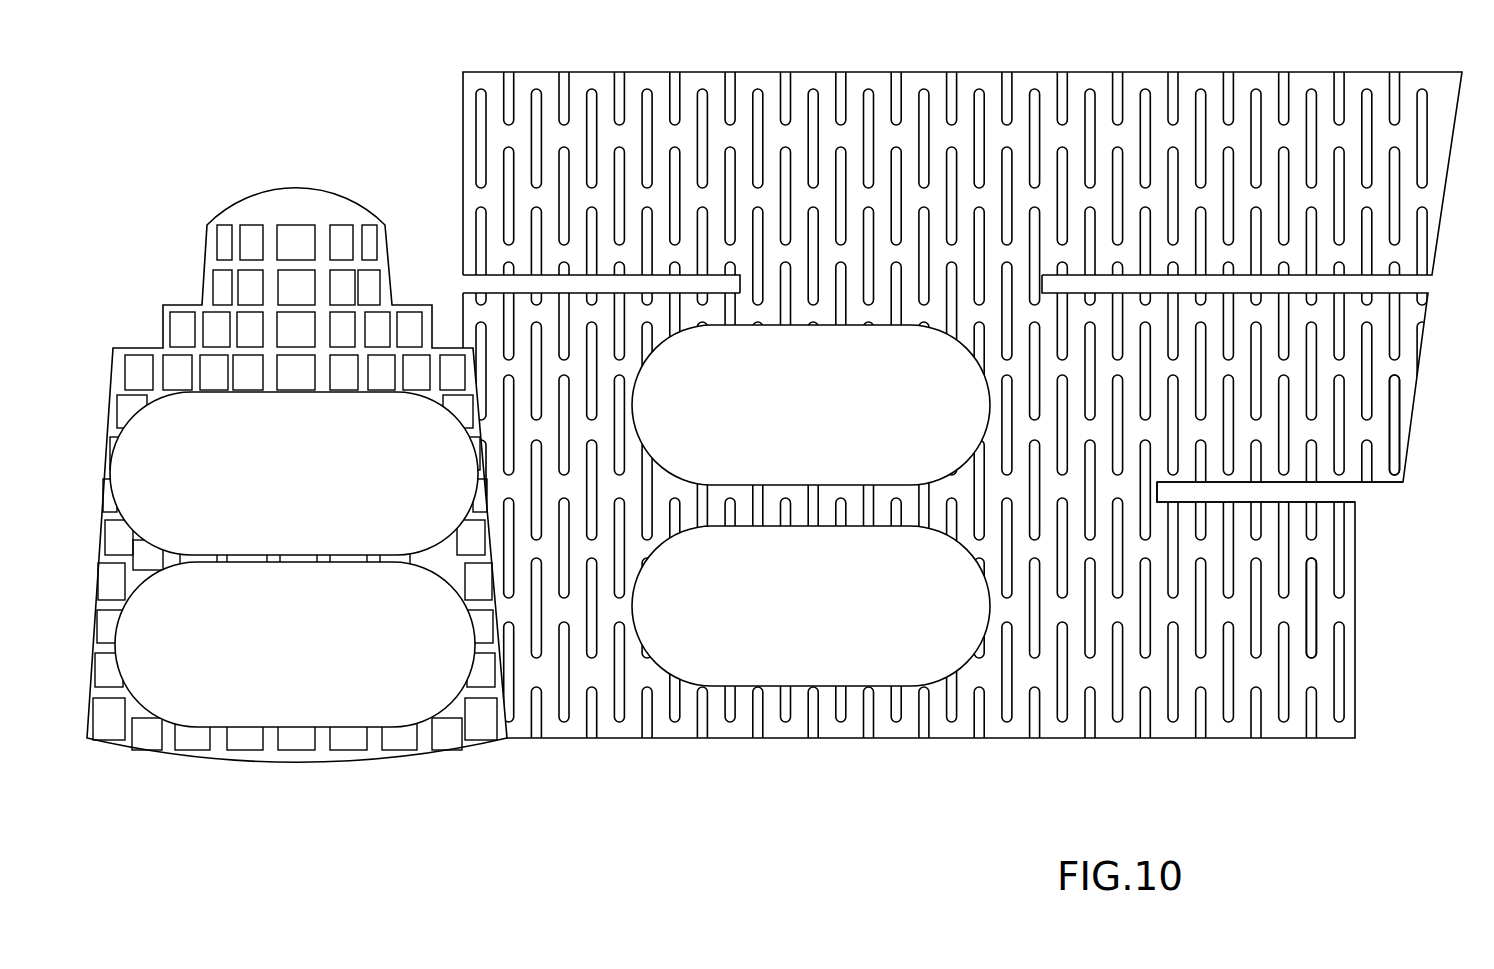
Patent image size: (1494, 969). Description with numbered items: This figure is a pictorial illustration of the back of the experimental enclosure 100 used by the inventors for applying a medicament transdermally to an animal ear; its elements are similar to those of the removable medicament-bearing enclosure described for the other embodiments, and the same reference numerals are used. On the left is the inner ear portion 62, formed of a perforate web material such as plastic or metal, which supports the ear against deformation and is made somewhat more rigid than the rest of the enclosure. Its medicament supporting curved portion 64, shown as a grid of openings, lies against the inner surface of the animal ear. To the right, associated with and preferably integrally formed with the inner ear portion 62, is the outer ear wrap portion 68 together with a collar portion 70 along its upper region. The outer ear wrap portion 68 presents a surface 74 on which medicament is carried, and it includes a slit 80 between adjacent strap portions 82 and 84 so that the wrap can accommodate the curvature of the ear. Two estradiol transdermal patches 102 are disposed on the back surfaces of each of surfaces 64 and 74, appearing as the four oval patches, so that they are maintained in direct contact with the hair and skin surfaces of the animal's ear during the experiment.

The enclosure 100 is at (747, 452).
The inner ear portion 62 is at (296, 517).
The medicament supporting curved portion 64 is at (272, 362).
The outer ear wrap portion 68 is at (747, 452).
The collar portion 70 is at (938, 50).
The surface of outer ear wrap 74 is at (988, 682).
The slit 80 is at (1323, 495).
The strap portion 82 is at (1377, 440).
The strap portion 84 is at (1305, 617).
The estradiol transdermal patch 102 is at (365, 497).